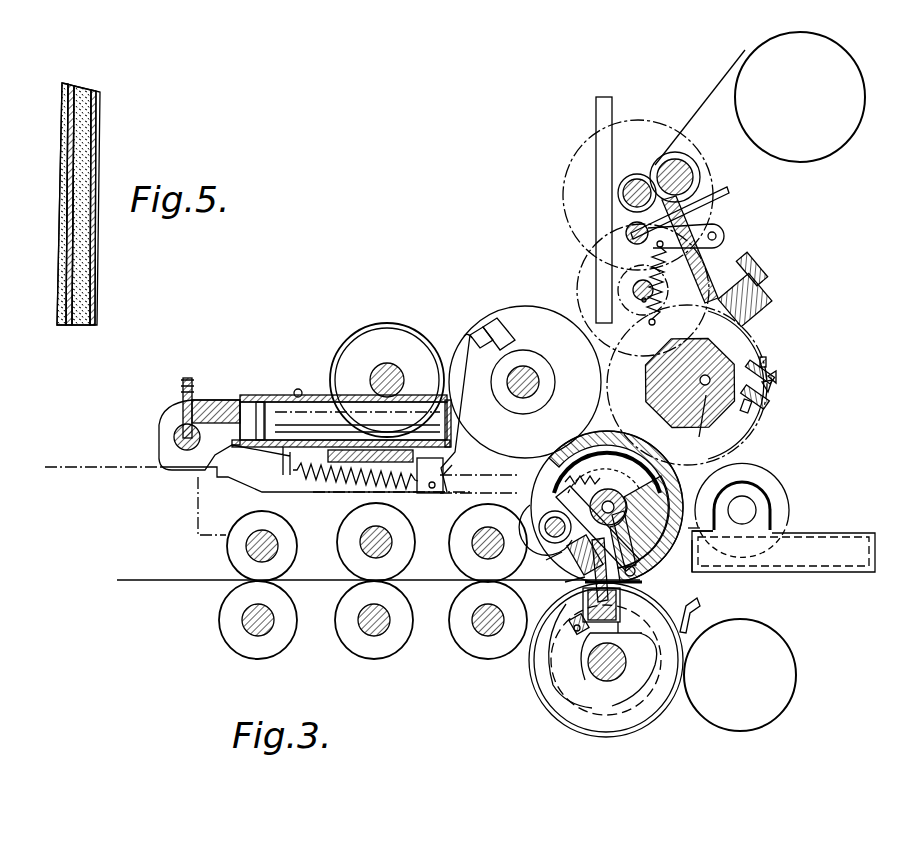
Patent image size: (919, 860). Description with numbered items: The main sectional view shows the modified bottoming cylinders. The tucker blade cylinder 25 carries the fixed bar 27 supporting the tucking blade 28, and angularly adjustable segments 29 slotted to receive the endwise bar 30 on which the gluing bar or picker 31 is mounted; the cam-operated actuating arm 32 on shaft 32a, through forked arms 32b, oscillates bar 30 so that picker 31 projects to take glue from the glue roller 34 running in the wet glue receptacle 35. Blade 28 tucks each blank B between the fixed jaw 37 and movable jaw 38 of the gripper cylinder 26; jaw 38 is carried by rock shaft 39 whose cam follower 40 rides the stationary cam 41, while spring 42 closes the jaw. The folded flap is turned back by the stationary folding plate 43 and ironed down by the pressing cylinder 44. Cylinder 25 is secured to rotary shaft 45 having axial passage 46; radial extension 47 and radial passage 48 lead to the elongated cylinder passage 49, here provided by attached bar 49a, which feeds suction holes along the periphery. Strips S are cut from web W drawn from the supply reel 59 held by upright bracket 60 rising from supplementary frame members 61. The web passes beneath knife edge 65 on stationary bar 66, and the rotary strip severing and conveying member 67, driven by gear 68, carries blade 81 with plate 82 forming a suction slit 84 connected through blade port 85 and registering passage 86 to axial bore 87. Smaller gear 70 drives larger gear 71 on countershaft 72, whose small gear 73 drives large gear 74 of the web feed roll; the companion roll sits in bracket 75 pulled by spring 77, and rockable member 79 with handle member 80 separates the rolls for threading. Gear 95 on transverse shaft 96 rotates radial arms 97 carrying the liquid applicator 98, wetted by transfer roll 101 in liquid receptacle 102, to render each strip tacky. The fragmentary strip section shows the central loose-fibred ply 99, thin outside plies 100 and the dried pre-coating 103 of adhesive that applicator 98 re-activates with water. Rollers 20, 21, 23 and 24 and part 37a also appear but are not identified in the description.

In FIG. 3, the lower feed roller 20 is at (225, 635).
In FIG. 3, the upper feed roller 21 is at (292, 506).
In FIG. 3, the roller 23 is at (398, 521).
In FIG. 3, the roller 24 is at (454, 557).
In FIG. 3, the tucker blade cylinder 25 is at (680, 473).
In FIG. 3, the gripper cylinder 26 is at (558, 717).
In FIG. 3, the fixed bar 27 is at (637, 571).
In FIG. 3, the tucking blade 28 is at (590, 586).
In FIG. 3, the angularly adjustable segments 29 is at (541, 531).
In FIG. 3, the endwise bar 30 is at (584, 566).
In FIG. 3, the gluing bar or picker 31 is at (565, 582).
In FIG. 3, the cam-operated actuating arm 32 is at (540, 510).
In FIG. 3, the shaft 32a is at (540, 525).
In FIG. 3, the forked arms 32b is at (546, 560).
In FIG. 3, the glue roller 34 is at (781, 495).
In FIG. 3, the wet glue receptacle 35 is at (853, 533).
In FIG. 3, the fixed jaw 37 is at (582, 555).
In FIG. 3, the pin 37a is at (575, 617).
In FIG. 3, the movable jaw 38 is at (622, 598).
In FIG. 3, the rock shaft 39 is at (597, 624).
In FIG. 3, the cam follower 40 is at (565, 637).
In FIG. 3, the stationary cam 41 is at (603, 708).
In FIG. 3, the spring 42 is at (623, 637).
In FIG. 3, the stationary folding plate 43 is at (698, 604).
In FIG. 3, the pressing cylinder 44 is at (788, 654).
In FIG. 3, the rotary shaft 45 is at (600, 487).
In FIG. 3, the axial passage 46 is at (612, 497).
In FIG. 3, the radial extension 47 is at (715, 500).
In FIG. 3, the radial passage 48 is at (705, 545).
In FIG. 3, the elongated cylinder passage 49 is at (643, 583).
In FIG. 3, the attached bar 49a is at (700, 528).
In FIG. 3, the supply reel 59 is at (862, 116).
In FIG. 3, the upright bracket 60 is at (599, 122).
In FIG. 3, the supplementary frame members 61 is at (472, 382).
In FIG. 3, the knife edge 65 is at (741, 268).
In FIG. 3, the stationary bar 66 is at (766, 301).
In FIG. 3, the rotary strip severing and conveying member 67 is at (668, 392).
In FIG. 3, the gear 68 is at (757, 426).
In FIG. 3, the smaller gear 70 is at (608, 393).
In FIG. 3, the larger gear 71 is at (578, 303).
In FIG. 3, the countershaft 72 is at (633, 287).
In FIG. 3, the small gear 73 is at (641, 301).
In FIG. 3, the large gear 74 is at (563, 190).
In FIG. 3, the bracket 75 is at (700, 216).
In FIG. 3, the spring 77 is at (661, 276).
In FIG. 3, the rockable member 79 is at (627, 236).
In FIG. 3, the handle member 80 is at (729, 190).
In FIG. 3, the blade or knife edge 81 is at (764, 367).
In FIG. 3, the plate 82 is at (762, 400).
In FIG. 3, the suction slit 84 is at (769, 388).
In FIG. 3, the blade port 85 is at (745, 412).
In FIG. 3, the registering passage 86 is at (761, 360).
In FIG. 3, the axial bore 87 is at (699, 437).
In FIG. 3, the gear 95 is at (599, 370).
In FIG. 3, the transverse shaft 96 is at (531, 392).
In FIG. 3, the radial arms 97 is at (500, 336).
In FIG. 3, the liquid applicator or picker 98 is at (466, 339).
In FIG. 5, the central loose-fibred ply 99 is at (85, 92).
In FIG. 5, the outside plies 100 is at (97, 251).
In FIG. 3, the transfer roll 101 is at (372, 325).
In FIG. 3, the liquid receptacle 102 is at (260, 402).
In FIG. 5, the dried pre-coating 103 is at (62, 293).
In FIG. 3, the blank B is at (438, 582).
In FIG. 3, the loose-fibred strip S is at (777, 377).
In FIG. 3, the web W is at (701, 109).